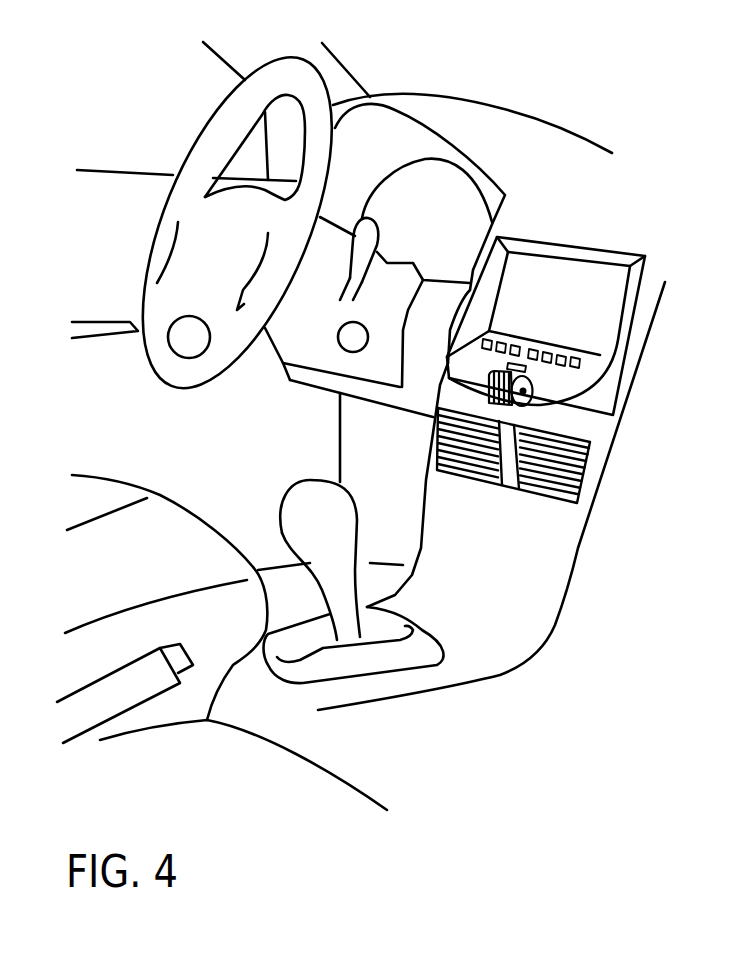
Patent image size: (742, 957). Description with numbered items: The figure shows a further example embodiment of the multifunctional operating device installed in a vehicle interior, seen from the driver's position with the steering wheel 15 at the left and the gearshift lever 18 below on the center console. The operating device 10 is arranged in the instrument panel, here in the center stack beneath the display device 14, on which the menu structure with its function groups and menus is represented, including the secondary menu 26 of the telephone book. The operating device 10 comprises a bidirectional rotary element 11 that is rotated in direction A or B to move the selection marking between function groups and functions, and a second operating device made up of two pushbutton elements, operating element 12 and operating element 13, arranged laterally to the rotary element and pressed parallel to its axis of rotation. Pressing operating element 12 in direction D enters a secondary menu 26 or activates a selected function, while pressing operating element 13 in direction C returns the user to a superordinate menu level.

The operating device 10 is at (496, 413).
The bidirectional rotary element 11 is at (527, 404).
The operating element 12 is at (497, 384).
The operating element 13 is at (528, 392).
The display device 14 is at (538, 291).
The steering wheel 15 is at (318, 172).
The gearshift lever 18 is at (327, 527).
The secondary menu 26 is at (576, 357).